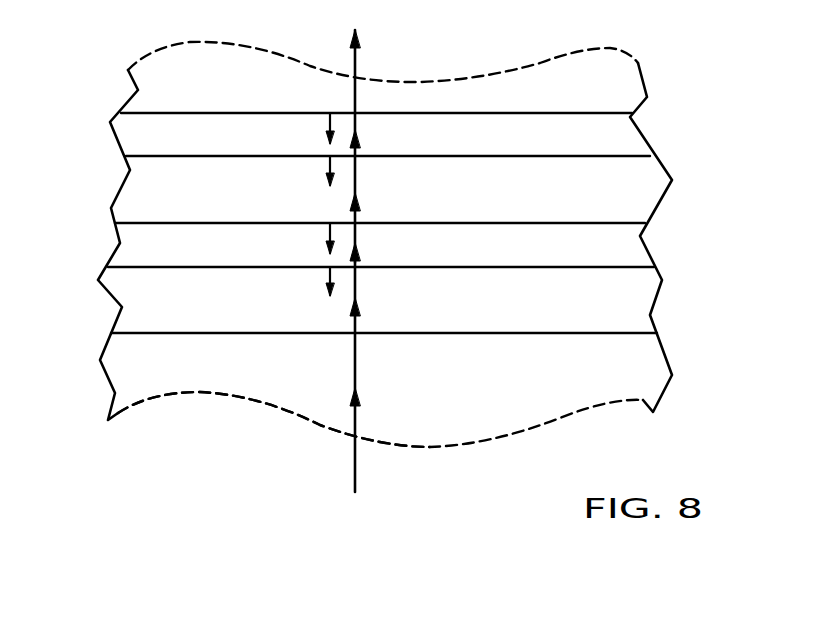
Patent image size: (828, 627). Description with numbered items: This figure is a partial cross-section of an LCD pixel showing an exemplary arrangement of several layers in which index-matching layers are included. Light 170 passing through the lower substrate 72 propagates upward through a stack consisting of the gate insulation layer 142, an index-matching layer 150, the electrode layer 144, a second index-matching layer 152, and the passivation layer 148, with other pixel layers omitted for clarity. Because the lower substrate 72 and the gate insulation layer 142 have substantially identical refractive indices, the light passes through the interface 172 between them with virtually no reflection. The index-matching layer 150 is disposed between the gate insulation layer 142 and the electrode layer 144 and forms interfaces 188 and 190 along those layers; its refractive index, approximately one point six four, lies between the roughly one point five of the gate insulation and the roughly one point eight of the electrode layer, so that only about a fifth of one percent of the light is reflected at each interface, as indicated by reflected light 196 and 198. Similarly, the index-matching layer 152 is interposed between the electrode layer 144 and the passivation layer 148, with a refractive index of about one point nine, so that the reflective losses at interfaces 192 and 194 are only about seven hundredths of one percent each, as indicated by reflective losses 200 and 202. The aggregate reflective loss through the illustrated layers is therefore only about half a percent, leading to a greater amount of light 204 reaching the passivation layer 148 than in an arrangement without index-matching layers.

The lower substrate 72 is at (115, 373).
The gate insulation layer 142 is at (122, 295).
The electrode layer 144 is at (135, 186).
The passivation layer 148 is at (138, 86).
The index-matching layer 150 is at (127, 247).
The index-matching layer 152 is at (131, 138).
The light 170 is at (355, 486).
The interface 172 is at (647, 330).
The interface 188 is at (647, 262).
The interface 190 is at (640, 217).
The interface 192 is at (643, 153).
The interface 194 is at (626, 111).
The reflected light 196 is at (328, 278).
The reflected light 198 is at (328, 236).
The reflective loss 200 is at (328, 167).
The reflective loss 202 is at (328, 122).
The light 204 is at (355, 64).